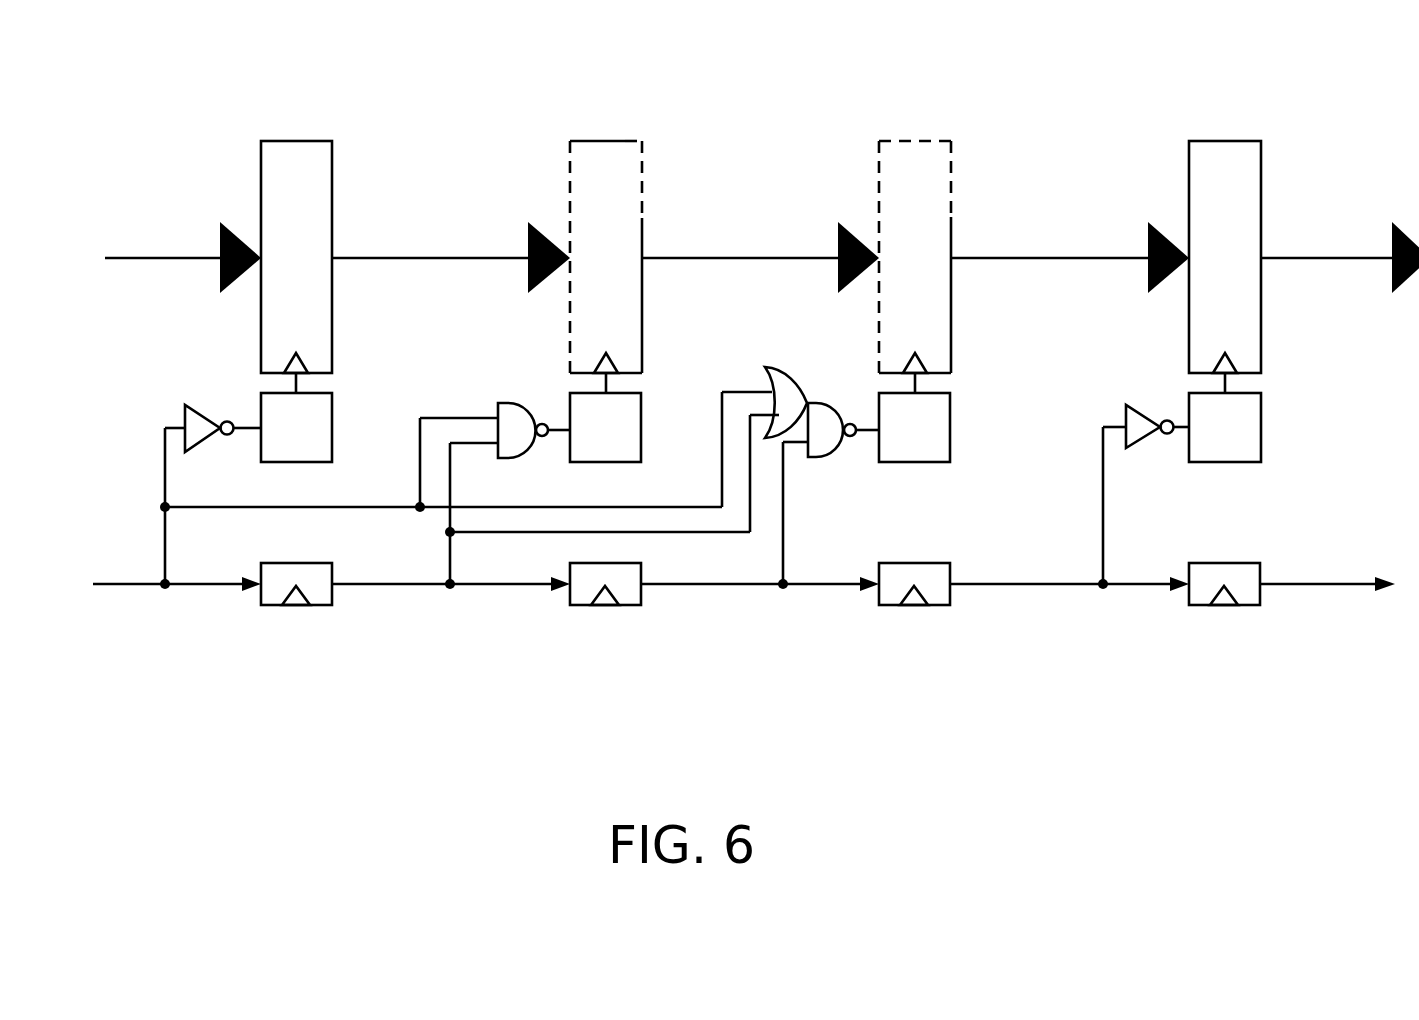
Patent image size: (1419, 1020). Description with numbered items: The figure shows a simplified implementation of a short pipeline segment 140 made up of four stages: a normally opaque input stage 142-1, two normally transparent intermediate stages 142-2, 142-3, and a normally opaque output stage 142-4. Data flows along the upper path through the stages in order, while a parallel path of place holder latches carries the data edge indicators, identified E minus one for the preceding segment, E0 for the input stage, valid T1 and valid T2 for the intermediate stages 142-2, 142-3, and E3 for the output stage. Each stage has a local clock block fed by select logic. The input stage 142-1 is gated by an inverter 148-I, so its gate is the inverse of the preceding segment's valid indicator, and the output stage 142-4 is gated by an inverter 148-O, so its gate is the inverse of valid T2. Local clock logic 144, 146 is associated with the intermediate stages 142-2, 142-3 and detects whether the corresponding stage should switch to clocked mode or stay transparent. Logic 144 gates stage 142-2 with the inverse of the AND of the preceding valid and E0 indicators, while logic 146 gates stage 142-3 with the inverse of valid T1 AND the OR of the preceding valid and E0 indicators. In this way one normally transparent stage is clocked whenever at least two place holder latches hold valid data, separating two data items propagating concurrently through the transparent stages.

The pipeline segment 140 is at (756, 404).
The normally opaque input stage 142-1 is at (295, 141).
The normally transparent intermediate stage 142-2 is at (607, 141).
The normally transparent intermediate stage 142-3 is at (917, 141).
The normally opaque output stage 142-4 is at (1225, 141).
The local clock logic 144 is at (508, 400).
The local clock logic 146 is at (793, 380).
The inverter 148-I is at (202, 413).
The inverter 148-O is at (1133, 405).